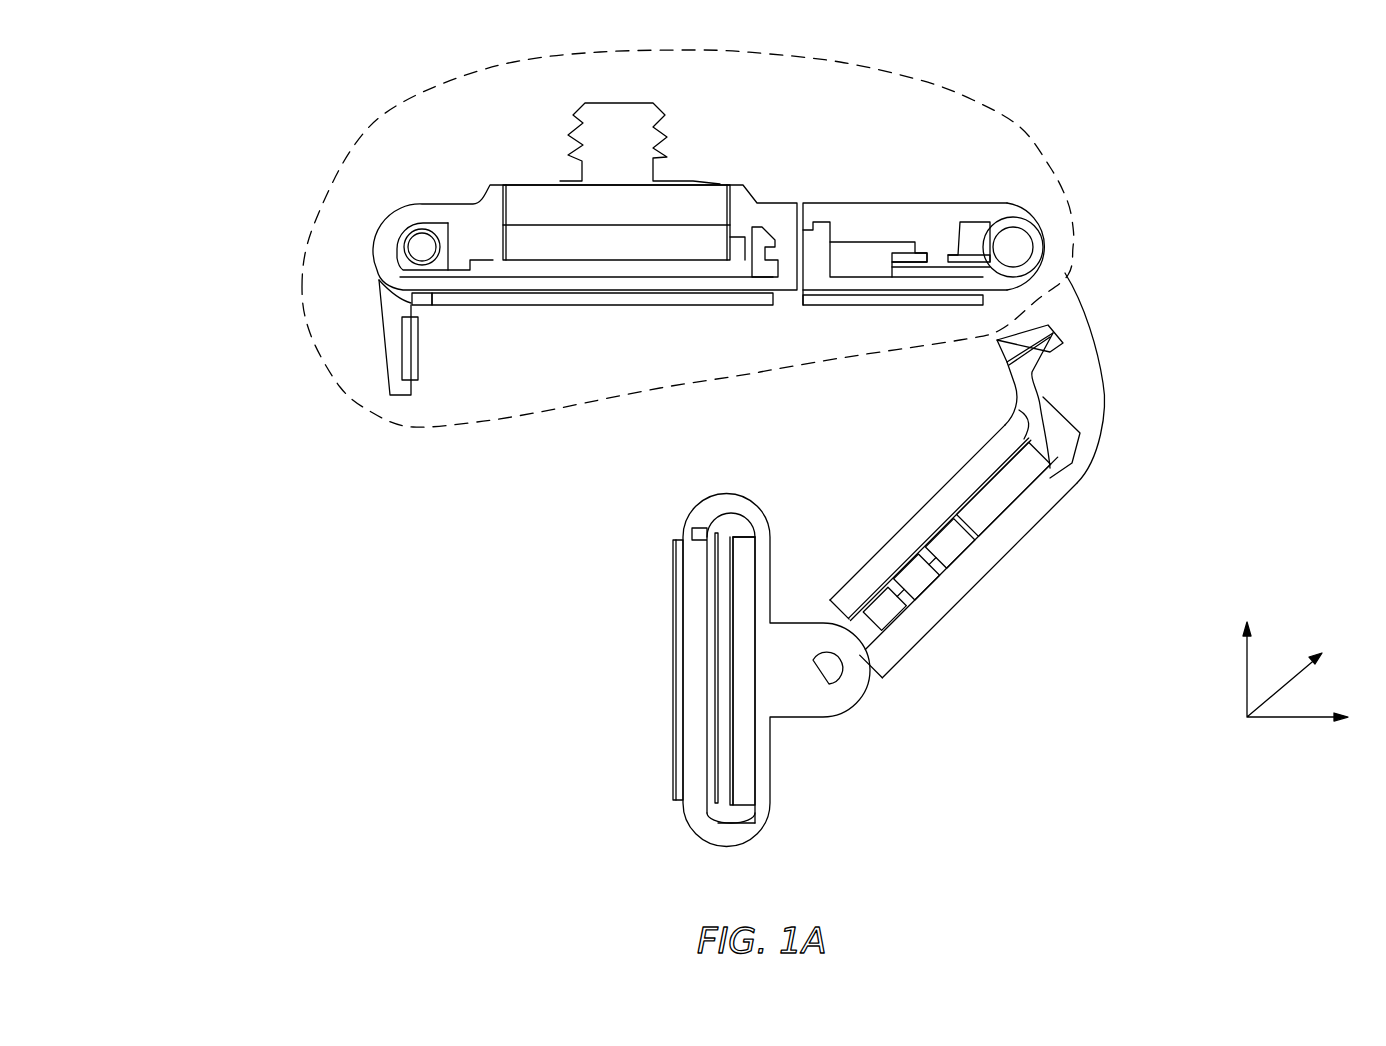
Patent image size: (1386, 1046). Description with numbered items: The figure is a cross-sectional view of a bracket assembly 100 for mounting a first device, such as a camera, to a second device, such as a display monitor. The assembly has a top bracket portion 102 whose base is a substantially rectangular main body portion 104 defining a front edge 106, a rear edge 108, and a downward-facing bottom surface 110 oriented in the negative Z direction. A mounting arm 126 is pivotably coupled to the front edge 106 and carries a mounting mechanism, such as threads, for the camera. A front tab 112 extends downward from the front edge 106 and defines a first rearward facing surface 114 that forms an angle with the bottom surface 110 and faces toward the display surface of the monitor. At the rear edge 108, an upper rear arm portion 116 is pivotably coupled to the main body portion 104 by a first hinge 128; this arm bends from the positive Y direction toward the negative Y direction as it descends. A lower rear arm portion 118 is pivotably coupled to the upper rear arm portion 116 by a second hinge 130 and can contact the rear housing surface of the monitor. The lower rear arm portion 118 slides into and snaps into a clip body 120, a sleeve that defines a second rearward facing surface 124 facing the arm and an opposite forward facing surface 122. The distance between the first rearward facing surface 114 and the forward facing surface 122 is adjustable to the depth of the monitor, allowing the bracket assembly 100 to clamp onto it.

The bracket assembly 100 is at (179, 91).
The top bracket portion 102 is at (403, 102).
The main body portion 104 is at (818, 213).
The front edge 106 is at (377, 230).
The rear edge 108 is at (1050, 220).
The bottom surface 110 is at (547, 305).
The front tab 112 is at (385, 335).
The first rearward facing surface 114 is at (420, 367).
The upper rear arm portion 116 is at (1107, 398).
The lower rear arm portion 118 is at (823, 717).
The clip body 120 is at (738, 760).
The forward facing surface 122 is at (673, 668).
The second rearward facing surface 124 is at (720, 773).
The mounting arm 126 is at (560, 207).
The first hinge 128 is at (1070, 270).
The second hinge 130 is at (857, 703).